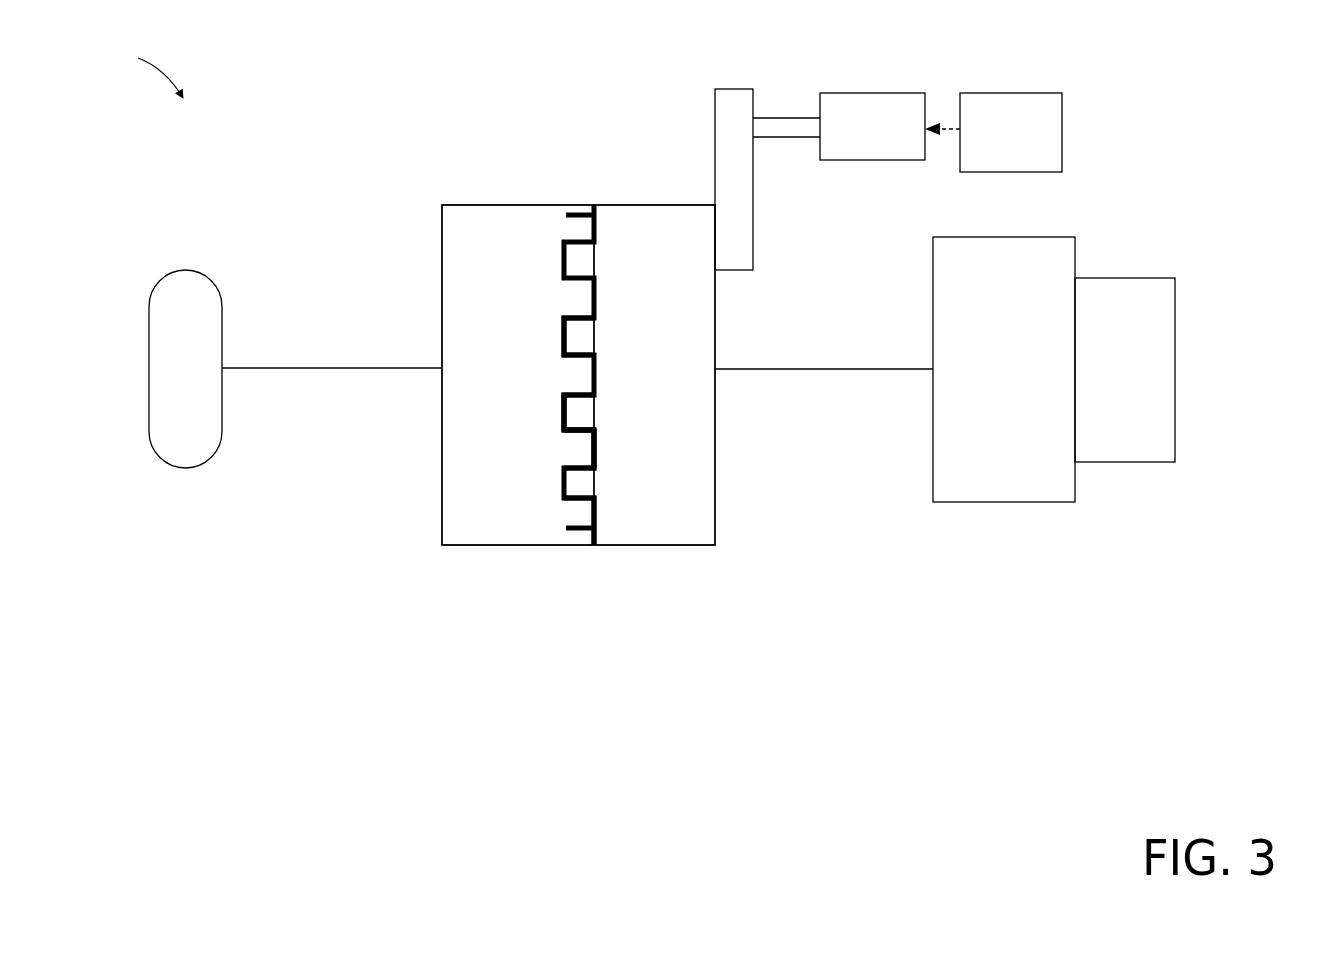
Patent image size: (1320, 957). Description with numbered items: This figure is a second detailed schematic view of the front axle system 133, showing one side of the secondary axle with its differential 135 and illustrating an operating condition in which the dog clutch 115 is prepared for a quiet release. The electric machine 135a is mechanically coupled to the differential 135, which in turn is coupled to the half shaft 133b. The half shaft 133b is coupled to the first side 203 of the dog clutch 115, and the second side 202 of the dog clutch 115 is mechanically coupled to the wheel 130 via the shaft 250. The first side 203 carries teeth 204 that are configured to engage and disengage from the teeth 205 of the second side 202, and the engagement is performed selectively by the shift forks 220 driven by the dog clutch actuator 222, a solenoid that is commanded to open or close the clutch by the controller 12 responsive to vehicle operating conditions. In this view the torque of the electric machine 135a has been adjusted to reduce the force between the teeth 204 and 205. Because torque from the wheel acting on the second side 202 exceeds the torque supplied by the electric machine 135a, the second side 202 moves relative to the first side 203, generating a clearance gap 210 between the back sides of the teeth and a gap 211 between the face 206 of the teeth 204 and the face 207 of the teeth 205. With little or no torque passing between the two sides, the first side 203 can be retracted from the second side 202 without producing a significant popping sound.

The front axle system 133 is at (139, 71).
The dog clutch 115 is at (532, 168).
The wheel 130 is at (183, 468).
The shaft 250 is at (267, 370).
The second side of dog clutch 202 is at (475, 302).
The first side of dog clutch 203 is at (635, 302).
The teeth 204 is at (585, 335).
The teeth 205 is at (568, 438).
The face of teeth 206 is at (597, 428).
The face of teeth 207 is at (560, 427).
The clearance gap 210 is at (560, 392).
The gap 211 is at (585, 433).
The shift forks 220 is at (735, 89).
The dog clutch actuator 222 is at (848, 139).
The controller 12 is at (993, 132).
The half shaft 133b is at (848, 369).
The differential 135 is at (981, 382).
The electric machine 135a is at (1125, 370).